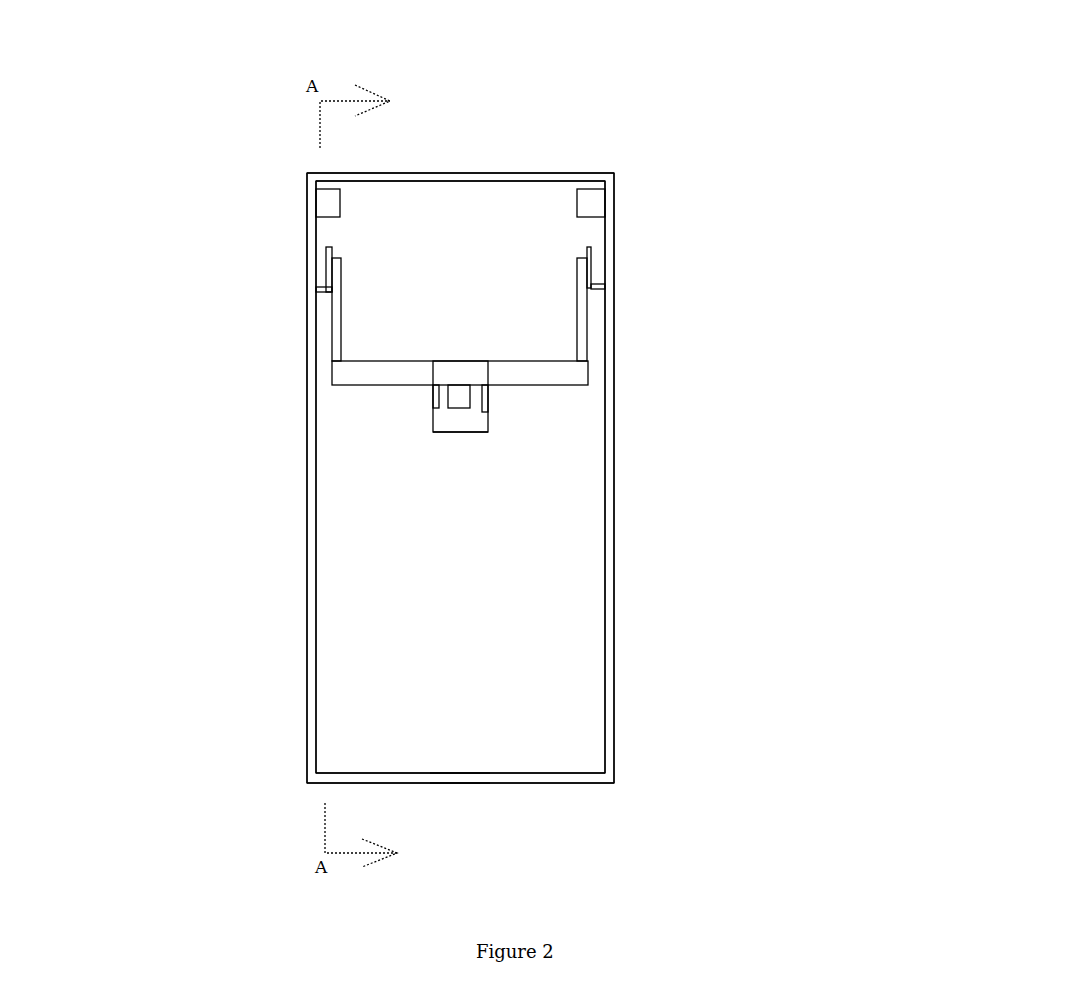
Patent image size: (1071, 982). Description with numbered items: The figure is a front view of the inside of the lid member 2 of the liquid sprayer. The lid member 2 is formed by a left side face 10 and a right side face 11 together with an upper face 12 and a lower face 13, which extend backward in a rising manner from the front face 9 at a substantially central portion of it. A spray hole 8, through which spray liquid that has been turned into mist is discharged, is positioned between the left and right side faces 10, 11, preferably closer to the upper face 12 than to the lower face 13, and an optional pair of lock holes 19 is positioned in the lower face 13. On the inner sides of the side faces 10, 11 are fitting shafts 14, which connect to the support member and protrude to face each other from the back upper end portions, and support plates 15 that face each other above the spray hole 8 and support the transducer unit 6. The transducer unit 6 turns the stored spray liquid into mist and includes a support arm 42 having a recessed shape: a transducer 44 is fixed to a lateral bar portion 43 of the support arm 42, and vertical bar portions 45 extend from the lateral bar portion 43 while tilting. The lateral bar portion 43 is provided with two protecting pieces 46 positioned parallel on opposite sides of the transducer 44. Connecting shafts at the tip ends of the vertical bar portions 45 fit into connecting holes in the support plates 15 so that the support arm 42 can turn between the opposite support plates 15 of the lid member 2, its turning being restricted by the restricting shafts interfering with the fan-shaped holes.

The lid member 2 is at (455, 445).
The transducer unit 6 is at (445, 321).
The spray hole 8 is at (427, 431).
The front face 9 is at (587, 660).
The left side face 10 is at (613, 573).
The right side face 11 is at (308, 647).
The upper face 12 is at (447, 172).
The lower face 13 is at (567, 783).
The fitting shaft 14 is at (602, 202).
The support plate 15 is at (591, 263).
The lock hole 19 is at (435, 783).
The support arm 42 is at (442, 347).
The lateral bar portion 43 is at (344, 376).
The transducer 44 is at (463, 403).
The vertical bar portion 45 is at (590, 317).
The protecting piece 46 is at (433, 403).